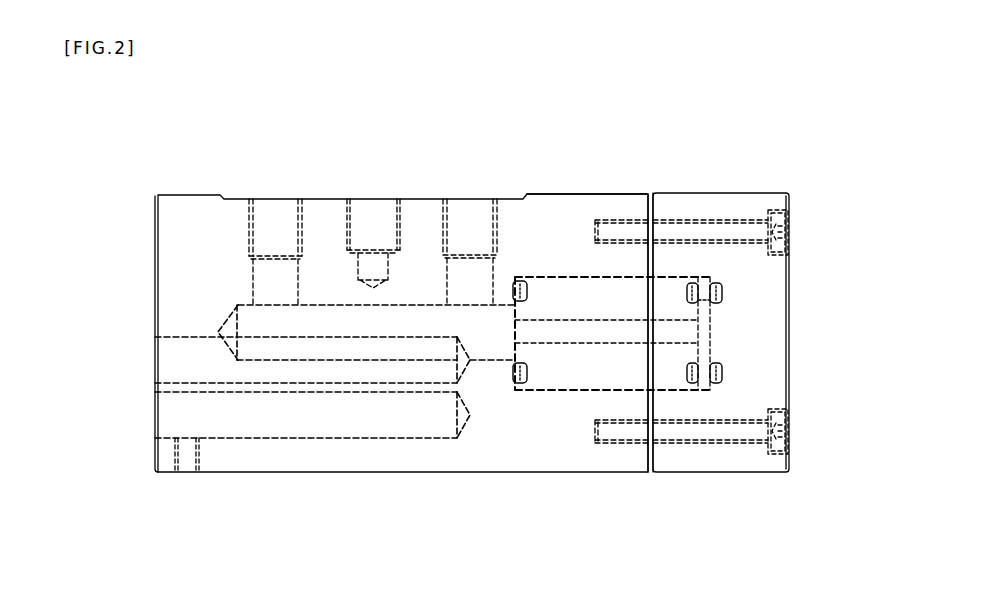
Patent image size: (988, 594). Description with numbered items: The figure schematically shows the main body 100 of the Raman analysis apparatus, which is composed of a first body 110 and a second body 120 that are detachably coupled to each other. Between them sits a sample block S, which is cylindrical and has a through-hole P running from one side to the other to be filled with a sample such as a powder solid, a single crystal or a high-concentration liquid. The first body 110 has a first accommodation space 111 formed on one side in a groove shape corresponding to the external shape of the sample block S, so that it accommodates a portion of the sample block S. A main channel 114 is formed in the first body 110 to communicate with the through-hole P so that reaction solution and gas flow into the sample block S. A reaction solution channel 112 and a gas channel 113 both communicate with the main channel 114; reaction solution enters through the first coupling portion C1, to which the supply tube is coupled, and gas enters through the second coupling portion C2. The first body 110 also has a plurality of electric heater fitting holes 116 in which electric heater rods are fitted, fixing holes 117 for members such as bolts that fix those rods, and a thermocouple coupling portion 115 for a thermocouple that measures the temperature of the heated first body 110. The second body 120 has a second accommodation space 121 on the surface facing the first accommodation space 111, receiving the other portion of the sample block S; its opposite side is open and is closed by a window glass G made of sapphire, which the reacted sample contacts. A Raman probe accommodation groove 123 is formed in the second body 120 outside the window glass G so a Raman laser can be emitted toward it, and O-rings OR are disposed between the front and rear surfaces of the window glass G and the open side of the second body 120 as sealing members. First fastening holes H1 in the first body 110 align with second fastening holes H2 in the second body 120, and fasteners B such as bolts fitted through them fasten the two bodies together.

The main body 100 is at (785, 158).
The first body 110 is at (366, 473).
The first accommodation space 111 is at (578, 297).
The reaction solution channel 112 is at (254, 281).
The gas channel 113 is at (448, 282).
The main channel 114 is at (330, 303).
The thermocouple coupling portion 115 is at (349, 231).
The electric heater fitting holes 116 is at (190, 338).
The fixing holes 117 is at (178, 462).
The second body 120 is at (739, 473).
The second accommodation space 121 is at (662, 300).
The Raman probe accommodation groove 123 is at (744, 313).
The first coupling portion C1 is at (254, 223).
The second coupling portion C2 is at (450, 223).
The O-ring OR is at (534, 277).
The first fastening holes H1 is at (625, 222).
The second fastening holes H2 is at (747, 217).
The fasteners B is at (684, 233).
The through-hole P is at (560, 344).
The sample block S is at (595, 373).
The window glass G is at (701, 335).